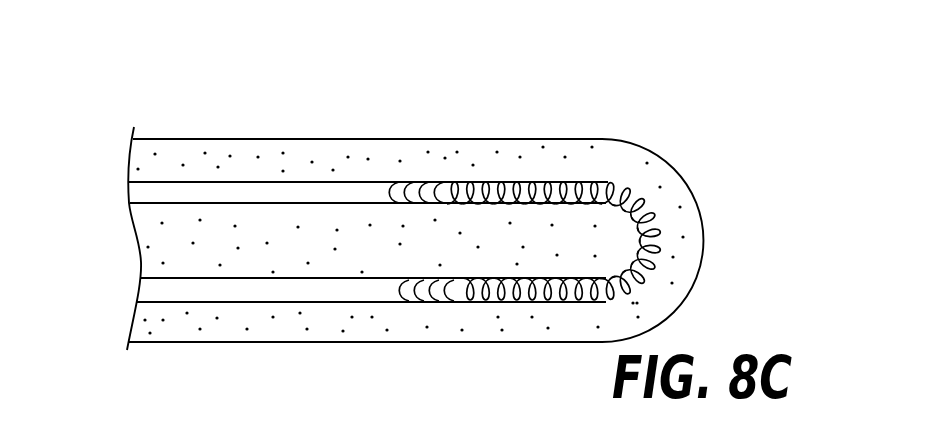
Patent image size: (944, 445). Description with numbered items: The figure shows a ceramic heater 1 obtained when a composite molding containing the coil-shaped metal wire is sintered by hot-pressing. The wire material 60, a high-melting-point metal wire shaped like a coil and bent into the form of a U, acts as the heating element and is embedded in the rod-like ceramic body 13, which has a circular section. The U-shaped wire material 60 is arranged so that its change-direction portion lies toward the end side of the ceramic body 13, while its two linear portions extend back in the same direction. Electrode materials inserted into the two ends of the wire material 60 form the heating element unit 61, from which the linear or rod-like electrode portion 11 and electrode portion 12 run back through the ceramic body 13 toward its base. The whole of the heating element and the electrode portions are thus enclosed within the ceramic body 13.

The ceramic heater 1 is at (507, 78).
The electrode portion 11 is at (223, 190).
The electrode portion 12 is at (223, 295).
The ceramic body 13 is at (319, 152).
The wire material 60 is at (605, 187).
The heating element unit 61 is at (400, 320).